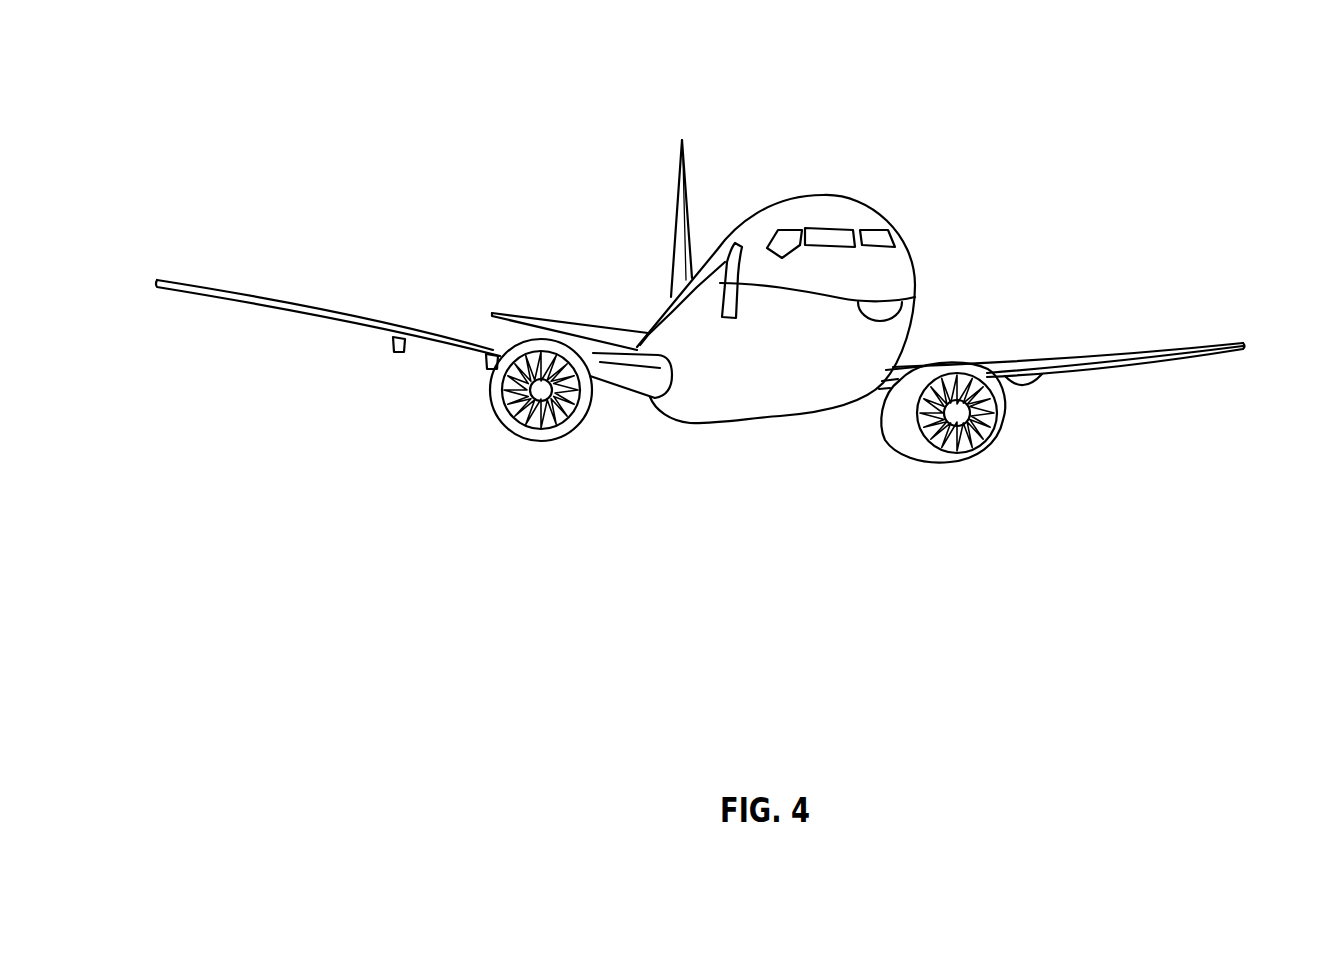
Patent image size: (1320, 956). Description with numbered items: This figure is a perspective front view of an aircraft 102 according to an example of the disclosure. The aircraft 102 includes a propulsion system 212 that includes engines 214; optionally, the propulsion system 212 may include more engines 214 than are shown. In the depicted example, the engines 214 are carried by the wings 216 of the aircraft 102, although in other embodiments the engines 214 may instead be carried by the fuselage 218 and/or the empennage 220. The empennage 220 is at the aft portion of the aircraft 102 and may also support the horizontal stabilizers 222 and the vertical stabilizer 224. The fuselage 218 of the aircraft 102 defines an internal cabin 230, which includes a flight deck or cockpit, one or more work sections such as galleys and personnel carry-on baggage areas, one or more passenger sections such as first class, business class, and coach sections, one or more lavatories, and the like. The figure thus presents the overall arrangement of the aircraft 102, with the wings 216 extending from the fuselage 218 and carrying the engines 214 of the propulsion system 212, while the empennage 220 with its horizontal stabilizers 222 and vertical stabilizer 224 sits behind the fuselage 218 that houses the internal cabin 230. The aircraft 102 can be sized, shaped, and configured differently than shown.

The aircraft 102 is at (430, 85).
The propulsion system 212 is at (395, 416).
The engines 214 is at (535, 435).
The wings 216 is at (305, 303).
The fuselage 218 is at (913, 262).
The empennage 220 is at (668, 293).
The horizontal stabilizers 222 is at (530, 313).
The vertical stabilizer 224 is at (680, 183).
The internal cabin 230 is at (830, 235).